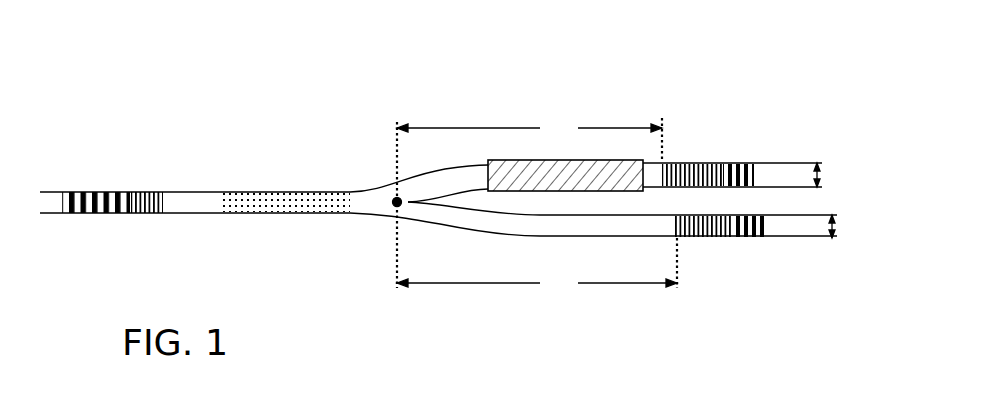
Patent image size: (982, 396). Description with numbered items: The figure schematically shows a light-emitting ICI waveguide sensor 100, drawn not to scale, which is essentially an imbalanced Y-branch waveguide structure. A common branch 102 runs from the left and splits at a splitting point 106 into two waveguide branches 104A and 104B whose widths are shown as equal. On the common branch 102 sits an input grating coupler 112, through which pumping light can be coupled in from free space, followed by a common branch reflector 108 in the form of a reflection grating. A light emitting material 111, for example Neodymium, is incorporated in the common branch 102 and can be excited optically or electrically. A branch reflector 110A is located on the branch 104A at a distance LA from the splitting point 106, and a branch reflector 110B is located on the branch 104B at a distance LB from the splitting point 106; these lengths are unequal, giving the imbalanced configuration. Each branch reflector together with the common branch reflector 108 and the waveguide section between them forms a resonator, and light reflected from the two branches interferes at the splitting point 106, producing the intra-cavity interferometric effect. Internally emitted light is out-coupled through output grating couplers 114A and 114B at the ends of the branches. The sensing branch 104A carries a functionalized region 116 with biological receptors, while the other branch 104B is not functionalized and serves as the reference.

The light-emitting ICI waveguide sensor 100 is at (342, 50).
The common branch 102 is at (242, 190).
The waveguide branch 104A is at (424, 186).
The waveguide branch 104B is at (512, 238).
The splitting point 106 is at (392, 206).
The common branch reflector 108 is at (144, 190).
The branch reflector 110A is at (694, 162).
The branch reflector 110B is at (700, 240).
The light emitting material 111 is at (300, 214).
The input grating coupler 112 is at (86, 190).
The output grating coupler 114A is at (754, 162).
The output grating coupler 114B is at (762, 240).
The functionalized region 116 is at (612, 159).